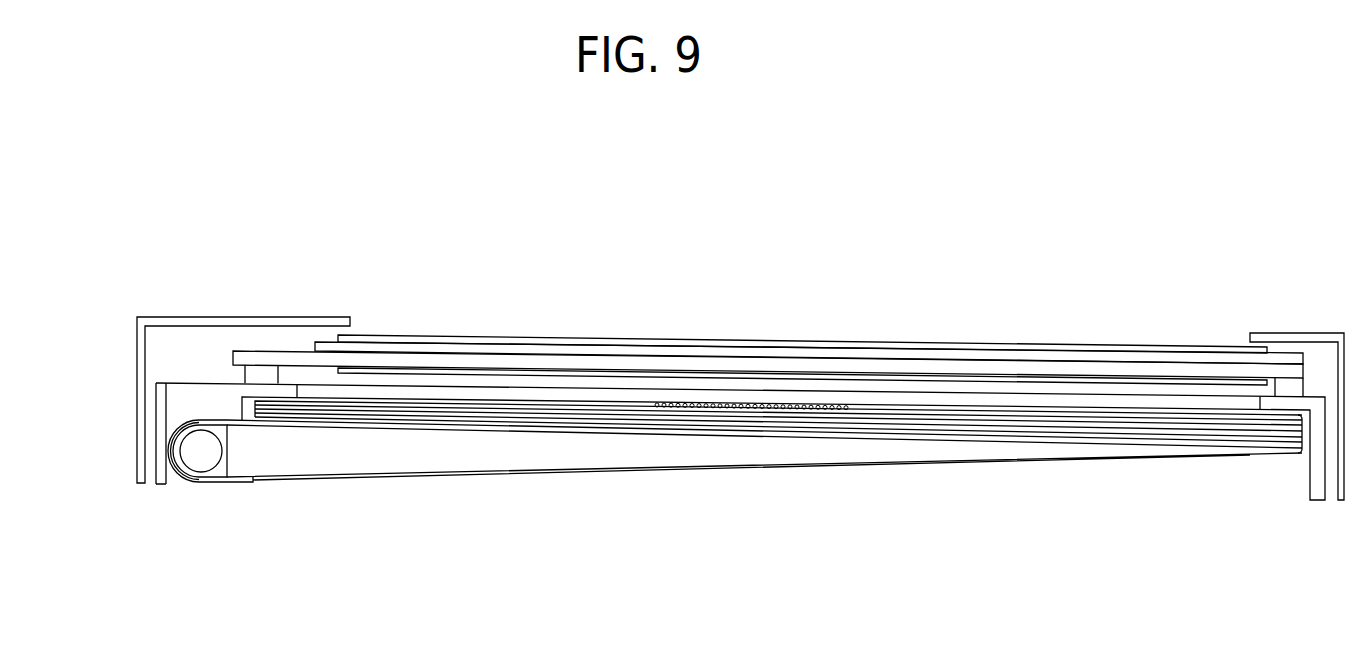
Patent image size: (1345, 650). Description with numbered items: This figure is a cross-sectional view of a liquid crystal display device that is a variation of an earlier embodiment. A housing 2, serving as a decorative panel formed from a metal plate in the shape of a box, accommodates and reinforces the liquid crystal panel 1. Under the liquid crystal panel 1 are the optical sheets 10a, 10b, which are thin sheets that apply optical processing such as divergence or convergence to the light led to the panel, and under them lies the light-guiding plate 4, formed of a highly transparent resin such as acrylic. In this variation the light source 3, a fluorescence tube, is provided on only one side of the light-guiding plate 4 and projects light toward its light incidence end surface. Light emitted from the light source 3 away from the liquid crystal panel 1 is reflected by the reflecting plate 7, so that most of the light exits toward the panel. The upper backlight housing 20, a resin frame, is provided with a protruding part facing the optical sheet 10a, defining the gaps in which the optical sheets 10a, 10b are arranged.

The liquid crystal panel 1 is at (836, 312).
The housing 2 is at (1300, 332).
The light source 3 is at (191, 515).
The light-guiding plate 4 is at (325, 455).
The reflecting plate 7 is at (633, 468).
The optical sheet 10a is at (546, 402).
The optical sheet 10b is at (455, 430).
The upper backlight housing 20 is at (177, 402).